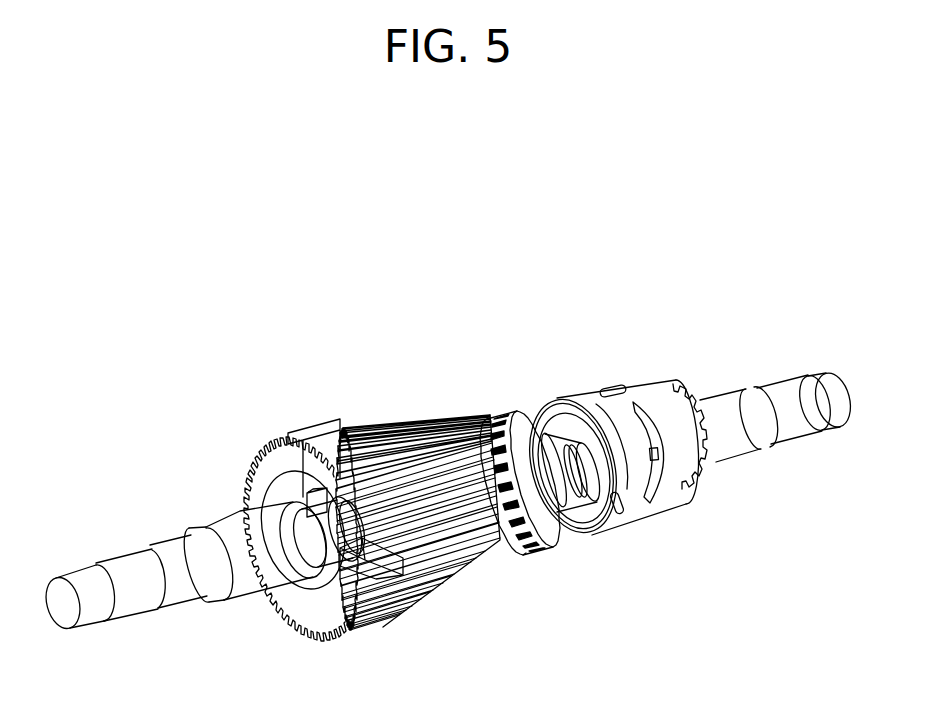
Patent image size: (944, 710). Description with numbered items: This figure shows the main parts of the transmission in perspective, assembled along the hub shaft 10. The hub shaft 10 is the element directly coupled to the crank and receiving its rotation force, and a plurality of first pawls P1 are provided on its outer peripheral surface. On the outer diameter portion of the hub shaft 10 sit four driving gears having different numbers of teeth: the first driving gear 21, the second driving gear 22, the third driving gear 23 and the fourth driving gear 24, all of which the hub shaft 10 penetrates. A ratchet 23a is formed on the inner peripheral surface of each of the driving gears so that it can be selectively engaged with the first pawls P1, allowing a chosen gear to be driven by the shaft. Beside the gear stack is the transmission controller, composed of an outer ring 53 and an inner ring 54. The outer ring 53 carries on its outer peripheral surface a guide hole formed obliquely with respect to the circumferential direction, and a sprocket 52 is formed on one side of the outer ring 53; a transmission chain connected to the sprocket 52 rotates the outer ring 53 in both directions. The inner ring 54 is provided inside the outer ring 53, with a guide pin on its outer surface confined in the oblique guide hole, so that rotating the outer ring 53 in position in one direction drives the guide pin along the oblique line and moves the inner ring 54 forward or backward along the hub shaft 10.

The hub shaft 10 is at (817, 388).
The first driving gear 21 is at (463, 427).
The second driving gear 22 is at (413, 413).
The third driving gear 23 is at (367, 420).
The ratchet 23a is at (430, 600).
The fourth driving gear 24 is at (313, 425).
The sprocket 52 is at (697, 410).
The outer ring 53 is at (643, 390).
The inner ring 54 is at (527, 413).
The first pawl P1 is at (320, 478).